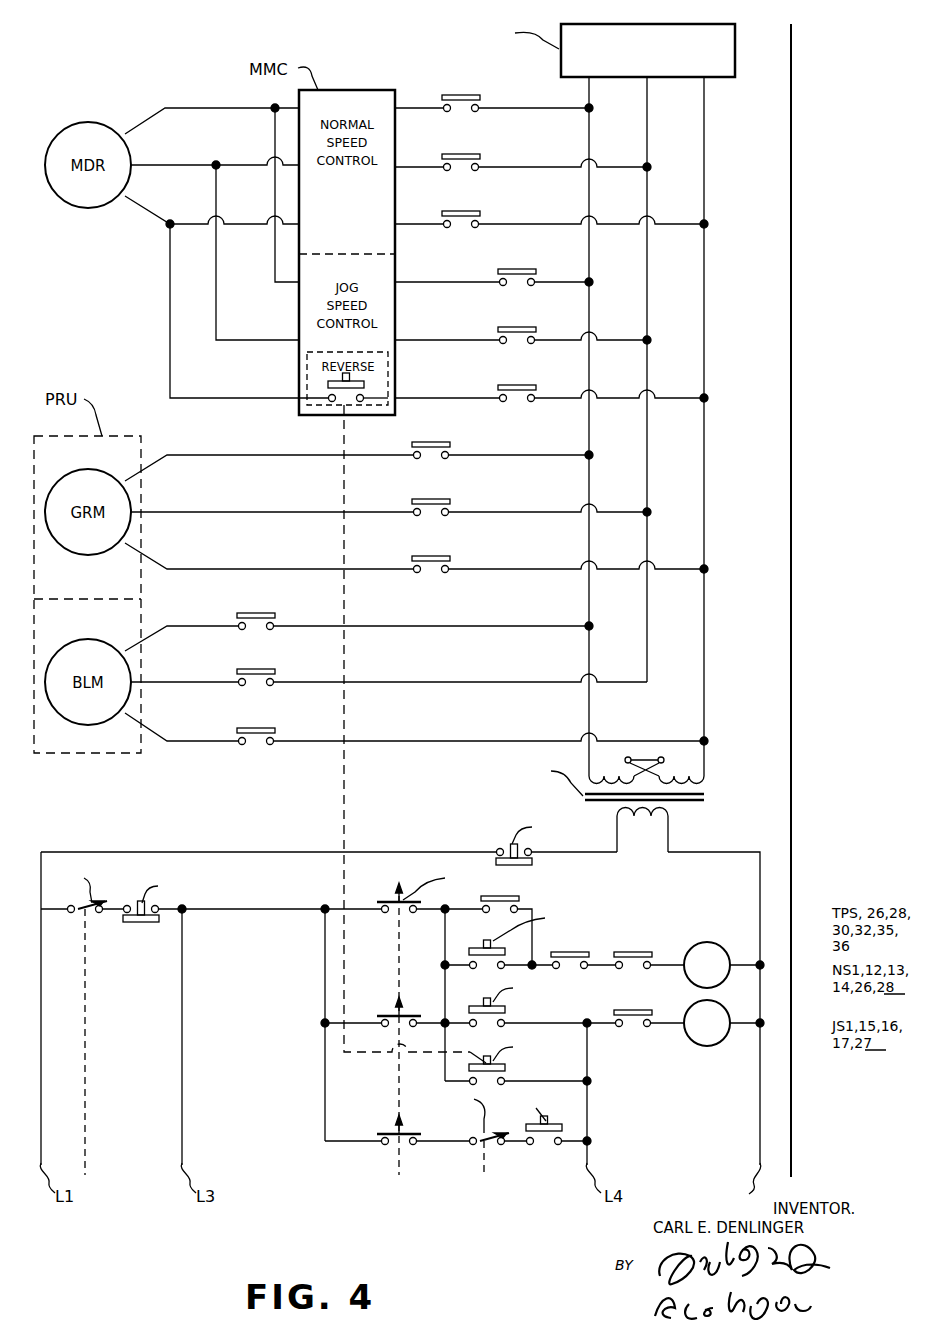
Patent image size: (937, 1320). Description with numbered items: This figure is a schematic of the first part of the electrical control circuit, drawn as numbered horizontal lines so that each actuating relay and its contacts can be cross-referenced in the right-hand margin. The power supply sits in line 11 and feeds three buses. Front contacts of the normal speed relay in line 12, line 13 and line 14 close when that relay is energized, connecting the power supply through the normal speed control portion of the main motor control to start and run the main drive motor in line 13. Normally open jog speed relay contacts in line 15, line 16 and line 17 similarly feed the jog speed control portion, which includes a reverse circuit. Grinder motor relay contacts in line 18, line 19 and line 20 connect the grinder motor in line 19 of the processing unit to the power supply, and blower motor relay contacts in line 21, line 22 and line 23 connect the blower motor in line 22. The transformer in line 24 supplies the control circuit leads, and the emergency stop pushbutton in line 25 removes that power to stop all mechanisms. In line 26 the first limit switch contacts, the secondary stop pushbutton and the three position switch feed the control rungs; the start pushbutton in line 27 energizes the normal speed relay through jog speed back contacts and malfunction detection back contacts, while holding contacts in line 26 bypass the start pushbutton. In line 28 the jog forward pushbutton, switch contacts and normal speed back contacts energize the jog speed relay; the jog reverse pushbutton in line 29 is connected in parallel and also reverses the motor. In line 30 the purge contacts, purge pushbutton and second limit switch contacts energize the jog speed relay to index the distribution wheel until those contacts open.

The line 11 is at (791, 48).
The line 12 is at (791, 108).
The line 13 is at (791, 167).
The line 14 is at (791, 224).
The line 15 is at (791, 282).
The line 16 is at (791, 340).
The line 17 is at (791, 398).
The line 18 is at (791, 455).
The line 19 is at (791, 512).
The line 20 is at (791, 569).
The line 21 is at (791, 626).
The line 22 is at (791, 682).
The line 23 is at (791, 741).
The line 24 is at (791, 795).
The line 25 is at (791, 852).
The line 26 is at (791, 909).
The line 27 is at (791, 965).
The line 28 is at (791, 1023).
The line 29 is at (791, 1081).
The line 30 is at (791, 1141).